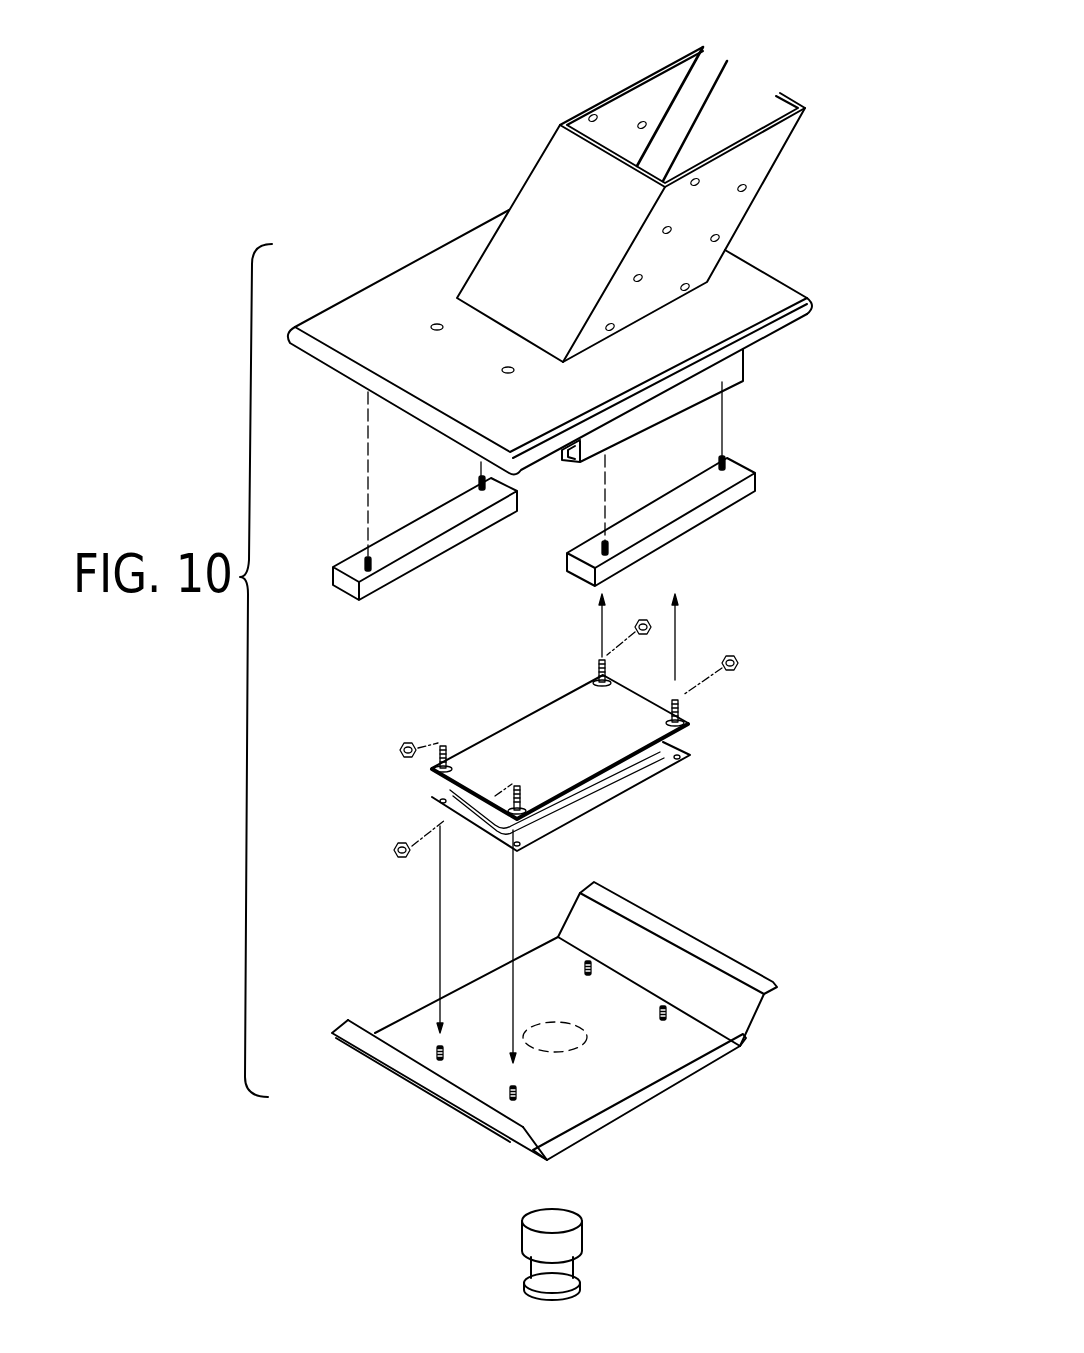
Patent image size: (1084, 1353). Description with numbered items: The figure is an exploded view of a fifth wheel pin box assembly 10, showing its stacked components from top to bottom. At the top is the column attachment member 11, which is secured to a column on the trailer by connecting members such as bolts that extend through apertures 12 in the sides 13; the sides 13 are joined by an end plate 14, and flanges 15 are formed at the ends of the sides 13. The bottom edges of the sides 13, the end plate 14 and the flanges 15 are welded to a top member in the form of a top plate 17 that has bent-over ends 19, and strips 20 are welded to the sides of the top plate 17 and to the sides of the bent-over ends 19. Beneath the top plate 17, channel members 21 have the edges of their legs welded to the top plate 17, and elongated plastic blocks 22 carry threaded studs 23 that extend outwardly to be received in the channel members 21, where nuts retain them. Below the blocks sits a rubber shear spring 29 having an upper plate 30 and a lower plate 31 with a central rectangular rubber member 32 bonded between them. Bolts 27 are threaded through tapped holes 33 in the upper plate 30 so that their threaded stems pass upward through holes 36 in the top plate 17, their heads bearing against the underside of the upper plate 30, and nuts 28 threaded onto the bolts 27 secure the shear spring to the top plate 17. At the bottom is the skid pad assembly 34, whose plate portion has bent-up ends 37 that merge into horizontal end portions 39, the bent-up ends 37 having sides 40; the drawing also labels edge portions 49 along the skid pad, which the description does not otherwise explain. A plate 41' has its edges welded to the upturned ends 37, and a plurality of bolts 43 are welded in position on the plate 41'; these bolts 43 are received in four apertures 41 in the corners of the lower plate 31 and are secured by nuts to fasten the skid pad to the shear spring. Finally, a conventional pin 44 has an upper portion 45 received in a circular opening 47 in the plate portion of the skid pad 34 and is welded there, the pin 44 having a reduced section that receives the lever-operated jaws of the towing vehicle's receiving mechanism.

The fifth wheel pin box assembly 10 is at (855, 74).
The column attachment member 11 is at (549, 143).
The apertures 12 is at (640, 123).
The sides 13 is at (577, 115).
The end plate 14 is at (547, 198).
The flanges 15 is at (772, 112).
The top plate 17 is at (410, 290).
The bent-over ends 19 is at (355, 372).
The strips 20 is at (800, 315).
The channel members 21 is at (733, 367).
The elongated plastic blocks 22 is at (417, 560).
The threaded studs 23 is at (370, 556).
The bolts 27 is at (596, 664).
The nuts 28 is at (636, 620).
The rubber shear spring 29 is at (508, 730).
The upper plate 30 is at (540, 717).
The lower plate 31 is at (686, 762).
The central rectangular rubber member 32 is at (433, 795).
The tapped holes 33 is at (425, 777).
The skid pad assembly 34 is at (700, 942).
The holes 36 is at (441, 350).
The bent-up ends 37 is at (755, 1028).
The horizontal end portions 39 is at (653, 912).
The sides 40 is at (570, 922).
The apertures 41 is at (520, 818).
The plate 41' is at (478, 955).
The bolts 43 is at (587, 977).
The pin 44 is at (522, 1262).
The upper portion 45 is at (522, 1232).
The circular opening 47 is at (588, 1037).
The flange lip 49 is at (587, 887).